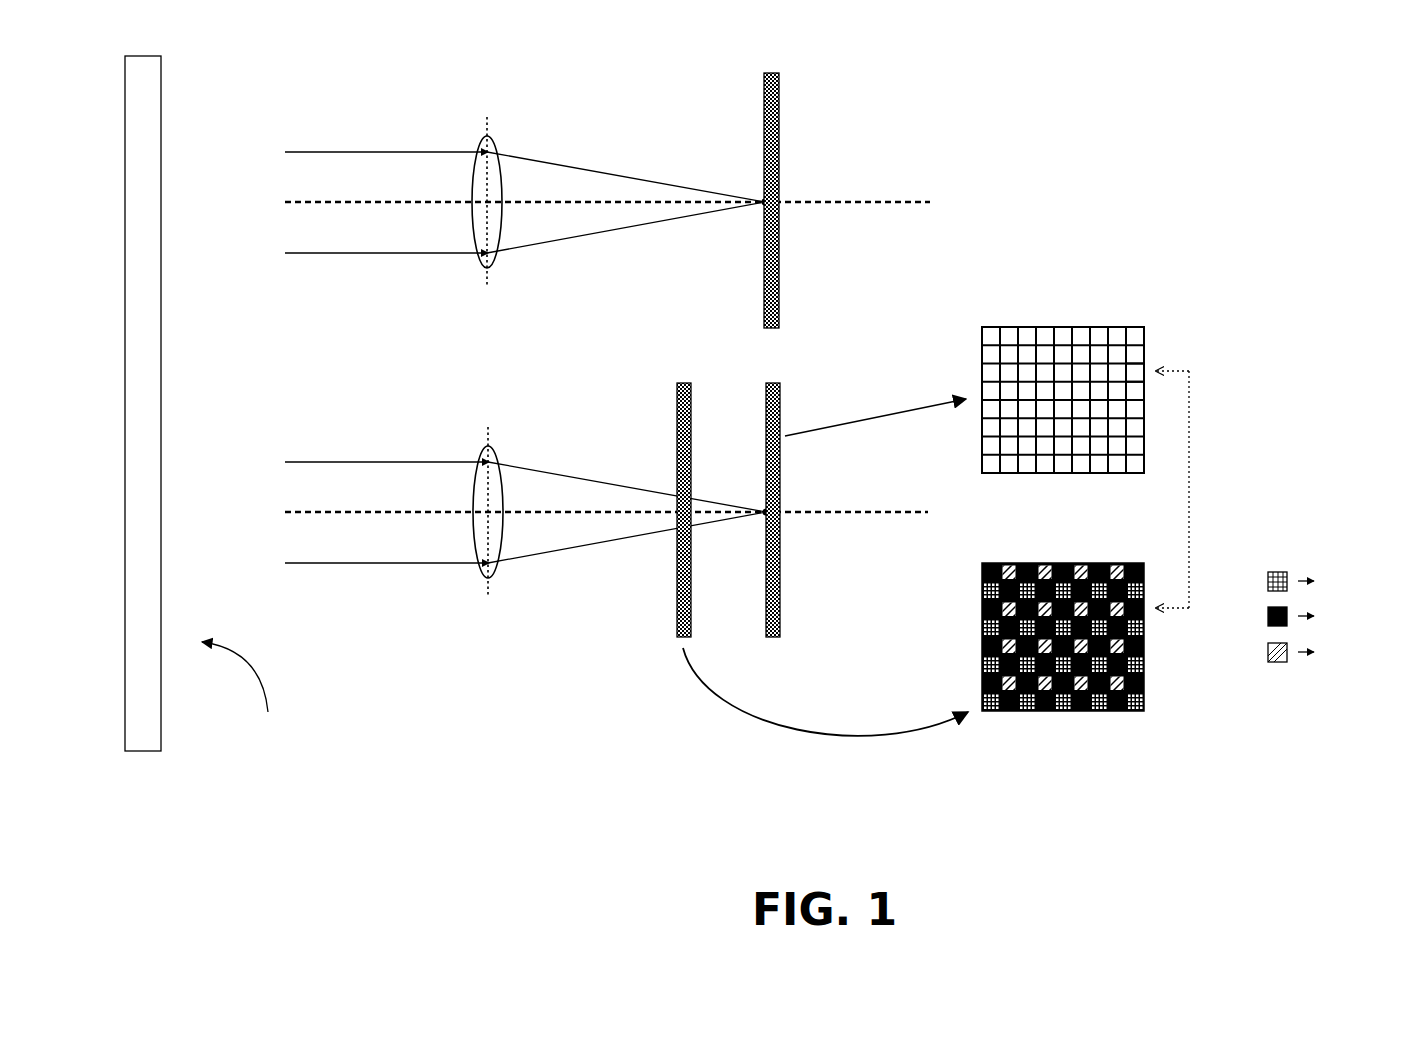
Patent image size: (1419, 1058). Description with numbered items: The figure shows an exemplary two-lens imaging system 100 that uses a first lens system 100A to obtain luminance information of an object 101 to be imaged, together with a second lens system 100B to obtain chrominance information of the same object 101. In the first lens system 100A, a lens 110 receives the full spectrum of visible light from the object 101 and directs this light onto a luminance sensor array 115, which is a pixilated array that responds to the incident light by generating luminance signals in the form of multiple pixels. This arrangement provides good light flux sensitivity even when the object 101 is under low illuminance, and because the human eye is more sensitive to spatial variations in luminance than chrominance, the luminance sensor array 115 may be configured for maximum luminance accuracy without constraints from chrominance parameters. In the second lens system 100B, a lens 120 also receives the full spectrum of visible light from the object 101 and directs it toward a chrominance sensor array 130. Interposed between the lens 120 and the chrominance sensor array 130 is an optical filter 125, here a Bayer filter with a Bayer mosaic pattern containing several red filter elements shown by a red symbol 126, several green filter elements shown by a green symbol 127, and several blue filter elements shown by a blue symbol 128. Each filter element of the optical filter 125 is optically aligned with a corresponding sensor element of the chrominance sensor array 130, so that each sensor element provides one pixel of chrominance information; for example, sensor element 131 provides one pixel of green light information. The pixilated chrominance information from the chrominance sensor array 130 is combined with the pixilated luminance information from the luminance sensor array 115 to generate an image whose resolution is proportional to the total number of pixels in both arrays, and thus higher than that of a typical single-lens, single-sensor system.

The two-lens imaging system 100 is at (1236, 84).
The first lens system 100A is at (417, 66).
The second lens system 100B is at (417, 358).
The object 101 is at (172, 128).
The lens 110 is at (496, 145).
The luminance sensor array 115 is at (785, 128).
The lens 120 is at (498, 457).
The optical filter 125 is at (668, 437).
The red symbol 126 is at (1263, 580).
The green symbol 127 is at (1262, 617).
The blue symbol 128 is at (1262, 654).
The chrominance sensor array 130 is at (773, 376).
The sensor element 131 is at (1140, 370).